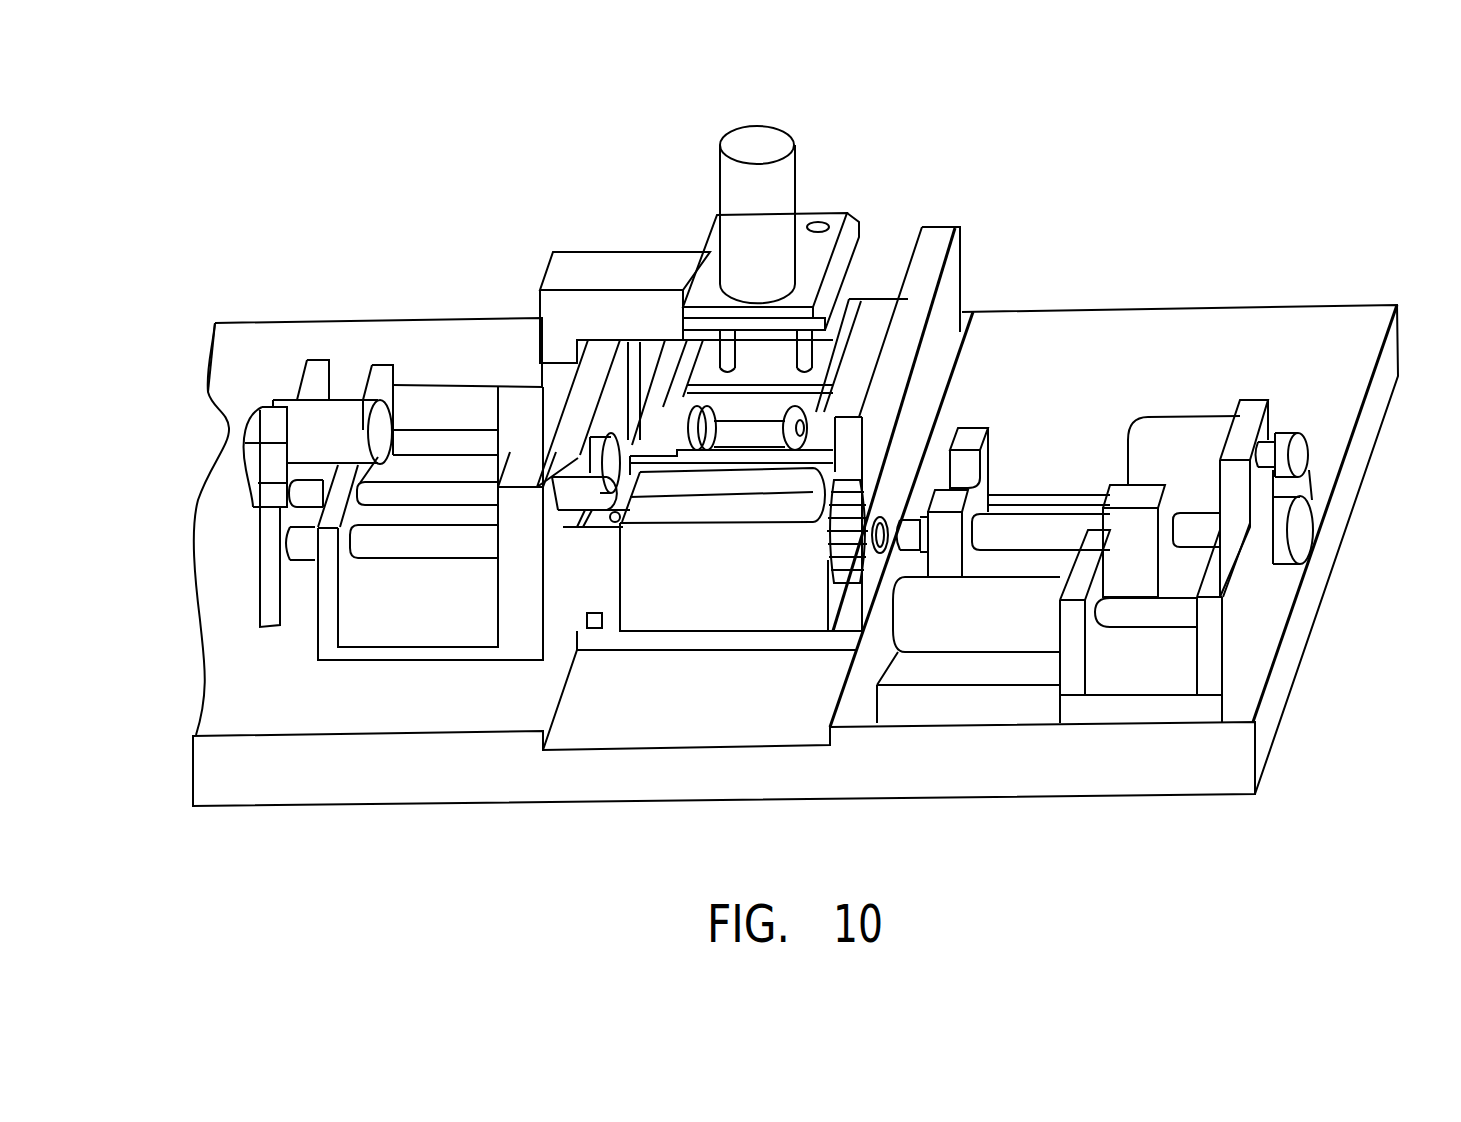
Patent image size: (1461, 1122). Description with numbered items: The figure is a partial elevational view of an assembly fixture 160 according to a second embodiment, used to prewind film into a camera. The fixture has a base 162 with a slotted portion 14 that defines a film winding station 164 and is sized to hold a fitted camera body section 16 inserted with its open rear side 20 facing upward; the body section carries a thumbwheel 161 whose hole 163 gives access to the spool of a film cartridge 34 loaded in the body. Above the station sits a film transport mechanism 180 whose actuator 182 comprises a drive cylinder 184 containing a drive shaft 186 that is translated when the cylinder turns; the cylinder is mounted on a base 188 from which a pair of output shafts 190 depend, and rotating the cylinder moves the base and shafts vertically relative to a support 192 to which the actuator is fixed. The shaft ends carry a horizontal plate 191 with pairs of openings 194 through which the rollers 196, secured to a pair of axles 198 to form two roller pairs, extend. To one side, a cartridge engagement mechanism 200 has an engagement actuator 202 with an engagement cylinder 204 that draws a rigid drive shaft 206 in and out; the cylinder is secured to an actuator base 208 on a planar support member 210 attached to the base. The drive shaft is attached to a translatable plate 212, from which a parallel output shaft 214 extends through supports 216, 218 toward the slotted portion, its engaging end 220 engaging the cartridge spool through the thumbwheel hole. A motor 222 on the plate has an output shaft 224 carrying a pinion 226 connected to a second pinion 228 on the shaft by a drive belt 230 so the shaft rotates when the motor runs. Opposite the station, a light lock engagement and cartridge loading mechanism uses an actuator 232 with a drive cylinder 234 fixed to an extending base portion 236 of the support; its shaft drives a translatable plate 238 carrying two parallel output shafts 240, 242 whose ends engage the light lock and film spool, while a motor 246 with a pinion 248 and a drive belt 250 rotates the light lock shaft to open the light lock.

The slotted portion 14 is at (588, 738).
The camera body section 16 is at (913, 233).
The open rear side 20 is at (960, 225).
The film cartridge 34 is at (717, 493).
The assembly fixture 160 is at (202, 320).
The thumbwheel 161 is at (838, 590).
The base 162 is at (242, 335).
The hole 163 is at (882, 555).
The film winding station 164 is at (843, 173).
The film transport mechanism 180 is at (610, 250).
The actuator 182 is at (720, 257).
The drive cylinder 184 is at (720, 160).
The drive shaft 186 is at (830, 227).
The base 188 is at (710, 293).
The output shafts 190 is at (710, 290).
The horizontal plate 191 is at (690, 382).
The support 192 is at (547, 280).
The openings 194 is at (800, 458).
The rollers 196 is at (745, 445).
The axles 198 is at (720, 443).
The cartridge engagement mechanism 200 is at (1353, 585).
The engagement actuator 202 is at (1053, 643).
The engagement cylinder 204 is at (993, 640).
The drive shaft 206 is at (1127, 617).
The actuator base 208 is at (1073, 690).
The planar support member 210 is at (905, 717).
The translatable plate 212 is at (1220, 670).
The output shaft 214 is at (1207, 530).
The support 216 is at (1118, 490).
The support 218 is at (980, 428).
The engaging end 220 is at (913, 552).
The motor 222 is at (1203, 413).
The output shaft 224 is at (1273, 437).
The pinion 226 is at (1310, 458).
The pulley 228 is at (1307, 527).
The drive belt 230 is at (432, 660).
The actuator 232 is at (407, 430).
The drive cylinder 234 is at (470, 430).
The extending base portion 236 is at (383, 363).
The translatable plate 238 is at (265, 578).
The output shaft 240 is at (423, 497).
The output shaft 242 is at (410, 547).
The motor 246 is at (317, 358).
The pinion 248 is at (253, 410).
The drive belt 250 is at (240, 463).